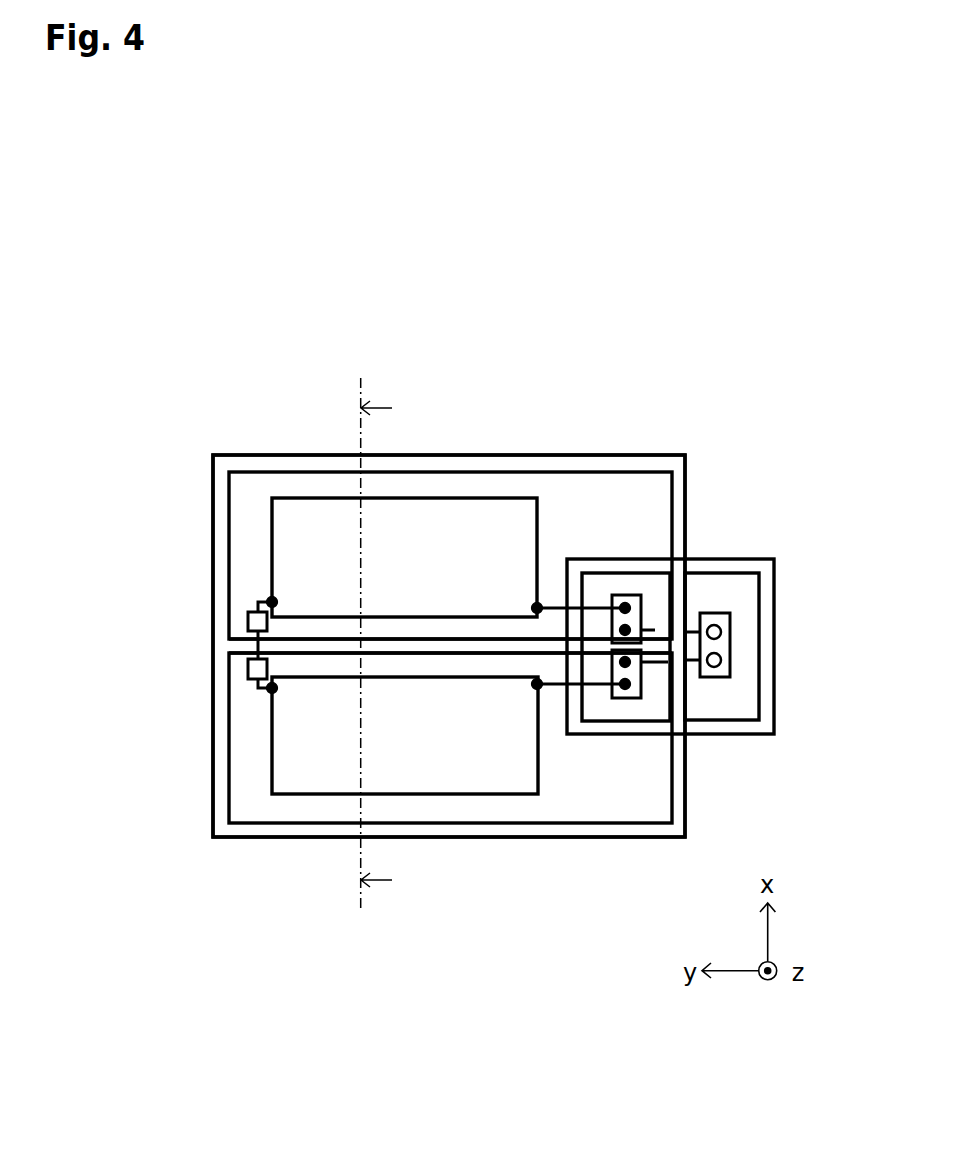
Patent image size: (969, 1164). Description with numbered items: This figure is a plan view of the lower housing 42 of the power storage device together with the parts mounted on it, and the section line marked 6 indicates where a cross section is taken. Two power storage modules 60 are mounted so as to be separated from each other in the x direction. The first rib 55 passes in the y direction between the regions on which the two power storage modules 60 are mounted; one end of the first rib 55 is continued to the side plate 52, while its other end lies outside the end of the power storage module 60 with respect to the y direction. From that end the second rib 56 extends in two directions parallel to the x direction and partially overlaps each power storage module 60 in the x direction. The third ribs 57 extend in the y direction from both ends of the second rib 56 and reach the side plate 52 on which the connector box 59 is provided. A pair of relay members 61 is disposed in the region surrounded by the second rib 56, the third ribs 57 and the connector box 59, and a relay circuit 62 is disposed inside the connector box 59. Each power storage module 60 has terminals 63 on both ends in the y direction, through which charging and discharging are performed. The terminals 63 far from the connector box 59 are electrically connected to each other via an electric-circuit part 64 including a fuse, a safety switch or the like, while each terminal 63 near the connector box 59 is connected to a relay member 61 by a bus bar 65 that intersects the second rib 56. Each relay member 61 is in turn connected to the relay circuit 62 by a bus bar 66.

The lower housing 42 is at (685, 425).
The side plate 52 is at (213, 542).
The first rib 55 is at (330, 639).
The second rib 56 is at (583, 585).
The third ribs 57 is at (610, 559).
The connector box 59 is at (774, 617).
The power storage module 60 is at (272, 540).
The relay member 61 is at (641, 610).
The relay circuit 62 is at (730, 648).
The terminal 63 is at (271, 602).
The electric-circuit part 64 is at (248, 668).
The bus bar 65 is at (549, 608).
The bus bar 66 is at (655, 630).
The section line 6- 6 is at (372, 645).